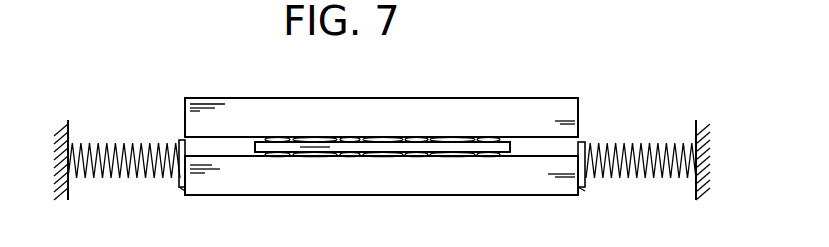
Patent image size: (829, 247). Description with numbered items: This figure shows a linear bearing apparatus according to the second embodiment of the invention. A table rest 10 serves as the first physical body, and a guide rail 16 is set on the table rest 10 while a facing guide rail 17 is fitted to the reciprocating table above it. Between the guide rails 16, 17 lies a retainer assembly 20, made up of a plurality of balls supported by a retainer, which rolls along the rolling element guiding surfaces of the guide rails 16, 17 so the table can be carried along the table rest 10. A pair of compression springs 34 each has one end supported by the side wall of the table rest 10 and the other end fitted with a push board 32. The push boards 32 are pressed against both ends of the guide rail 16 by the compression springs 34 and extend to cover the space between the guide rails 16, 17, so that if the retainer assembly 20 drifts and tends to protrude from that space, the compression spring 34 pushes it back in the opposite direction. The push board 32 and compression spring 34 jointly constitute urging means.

The table rest 10 is at (60, 190).
The guide rail 16 is at (534, 185).
The guide rail 17 is at (541, 115).
The retainer assembly 20 is at (384, 148).
The push board 32 is at (181, 190).
The compression spring 34 is at (110, 178).